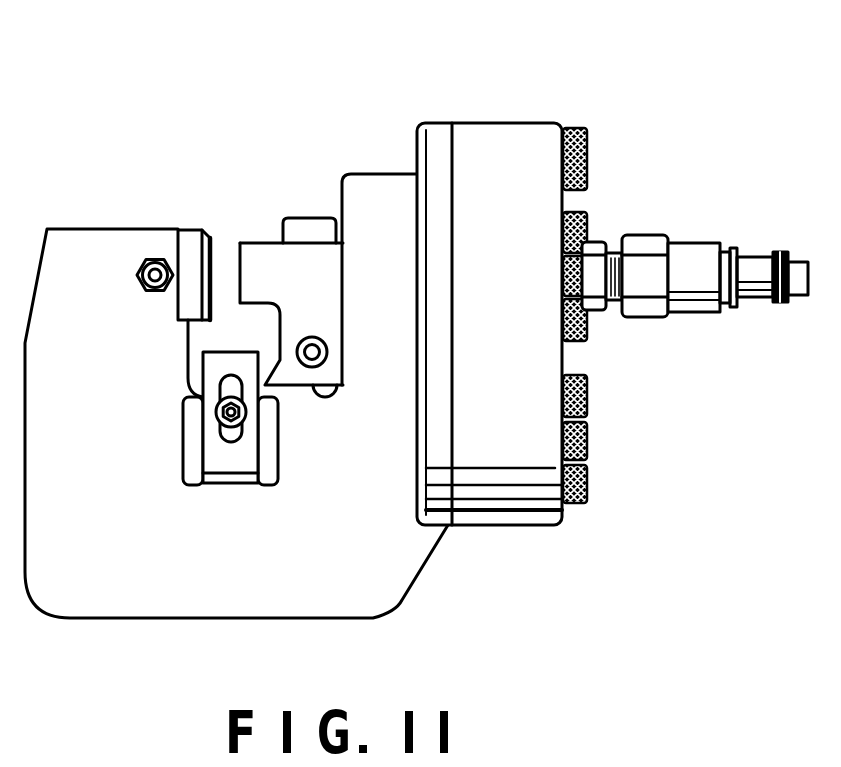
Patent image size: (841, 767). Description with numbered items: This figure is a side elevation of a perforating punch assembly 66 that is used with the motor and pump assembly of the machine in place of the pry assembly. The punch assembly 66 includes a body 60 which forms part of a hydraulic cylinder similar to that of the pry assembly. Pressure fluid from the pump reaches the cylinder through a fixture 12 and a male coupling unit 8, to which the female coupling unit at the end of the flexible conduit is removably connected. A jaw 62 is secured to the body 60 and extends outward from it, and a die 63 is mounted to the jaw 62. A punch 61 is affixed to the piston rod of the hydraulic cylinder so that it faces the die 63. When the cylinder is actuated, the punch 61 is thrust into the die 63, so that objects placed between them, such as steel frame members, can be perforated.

The male coupling unit 8 is at (690, 300).
The fixture 12 is at (645, 250).
The body 60 is at (500, 503).
The punch 61 is at (295, 230).
The jaw 62 is at (225, 583).
The die 63 is at (195, 240).
The perforating punch assembly 66 is at (399, 133).